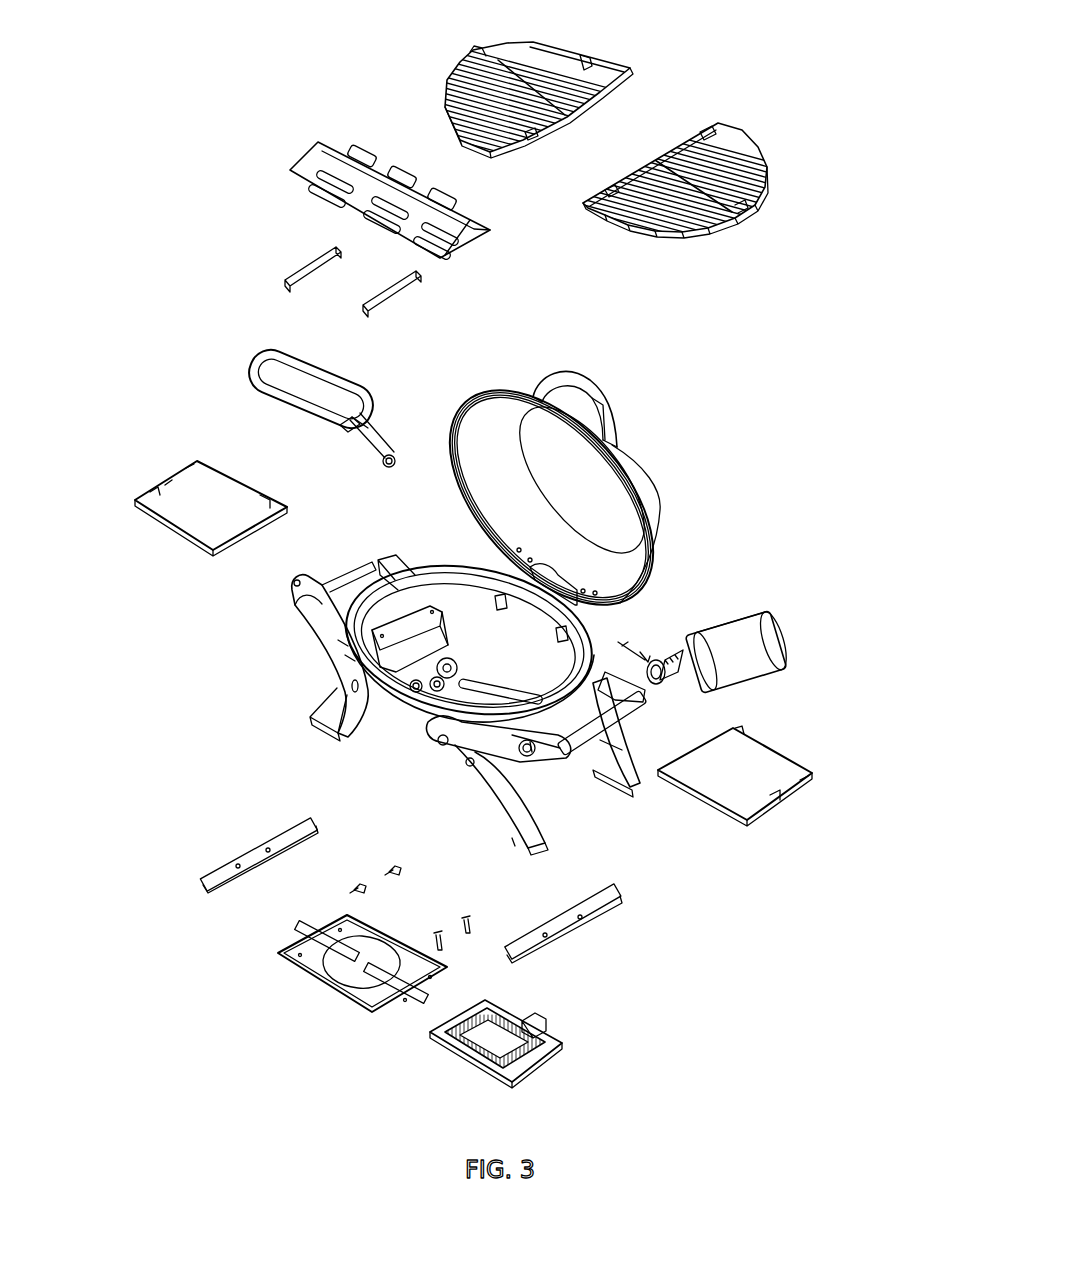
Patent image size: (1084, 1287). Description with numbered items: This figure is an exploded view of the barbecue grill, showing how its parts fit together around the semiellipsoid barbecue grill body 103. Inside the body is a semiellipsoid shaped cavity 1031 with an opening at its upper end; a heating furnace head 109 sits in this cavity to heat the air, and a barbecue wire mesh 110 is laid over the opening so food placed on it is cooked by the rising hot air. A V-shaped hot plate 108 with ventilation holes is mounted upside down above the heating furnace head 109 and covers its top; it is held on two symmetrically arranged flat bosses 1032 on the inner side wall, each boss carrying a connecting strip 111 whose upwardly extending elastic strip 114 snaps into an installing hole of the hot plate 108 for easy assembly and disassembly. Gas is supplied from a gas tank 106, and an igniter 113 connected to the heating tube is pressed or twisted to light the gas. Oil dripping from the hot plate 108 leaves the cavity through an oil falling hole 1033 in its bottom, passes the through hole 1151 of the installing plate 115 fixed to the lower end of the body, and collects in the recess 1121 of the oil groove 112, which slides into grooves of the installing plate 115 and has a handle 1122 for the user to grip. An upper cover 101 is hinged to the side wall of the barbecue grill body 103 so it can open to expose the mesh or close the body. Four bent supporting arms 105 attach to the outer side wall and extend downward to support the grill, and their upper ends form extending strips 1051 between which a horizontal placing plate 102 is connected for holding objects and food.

The upper cover 101 is at (650, 503).
The placing plate 102 is at (205, 488).
The barbecue grill body 103 is at (415, 706).
The semiellipsoid shaped cavity 1031 is at (458, 608).
The flat boss 1032 is at (405, 620).
The oil falling hole 1033 is at (467, 700).
The supporting arm 105 is at (328, 640).
The extending strip 1051 is at (312, 603).
The gas tank 106 is at (728, 638).
The hot plate 108 is at (345, 200).
The heating furnace head 109 is at (277, 352).
The barbecue wire mesh 110 is at (607, 63).
The connecting strip 111 is at (395, 300).
The oil groove 112 is at (555, 1032).
The recess 1121 is at (493, 1048).
The handle 1122 is at (530, 1025).
The igniter 113 is at (703, 697).
The elastic strip 114 is at (418, 276).
The installing plate 115 is at (292, 982).
The through hole 1151 is at (360, 960).